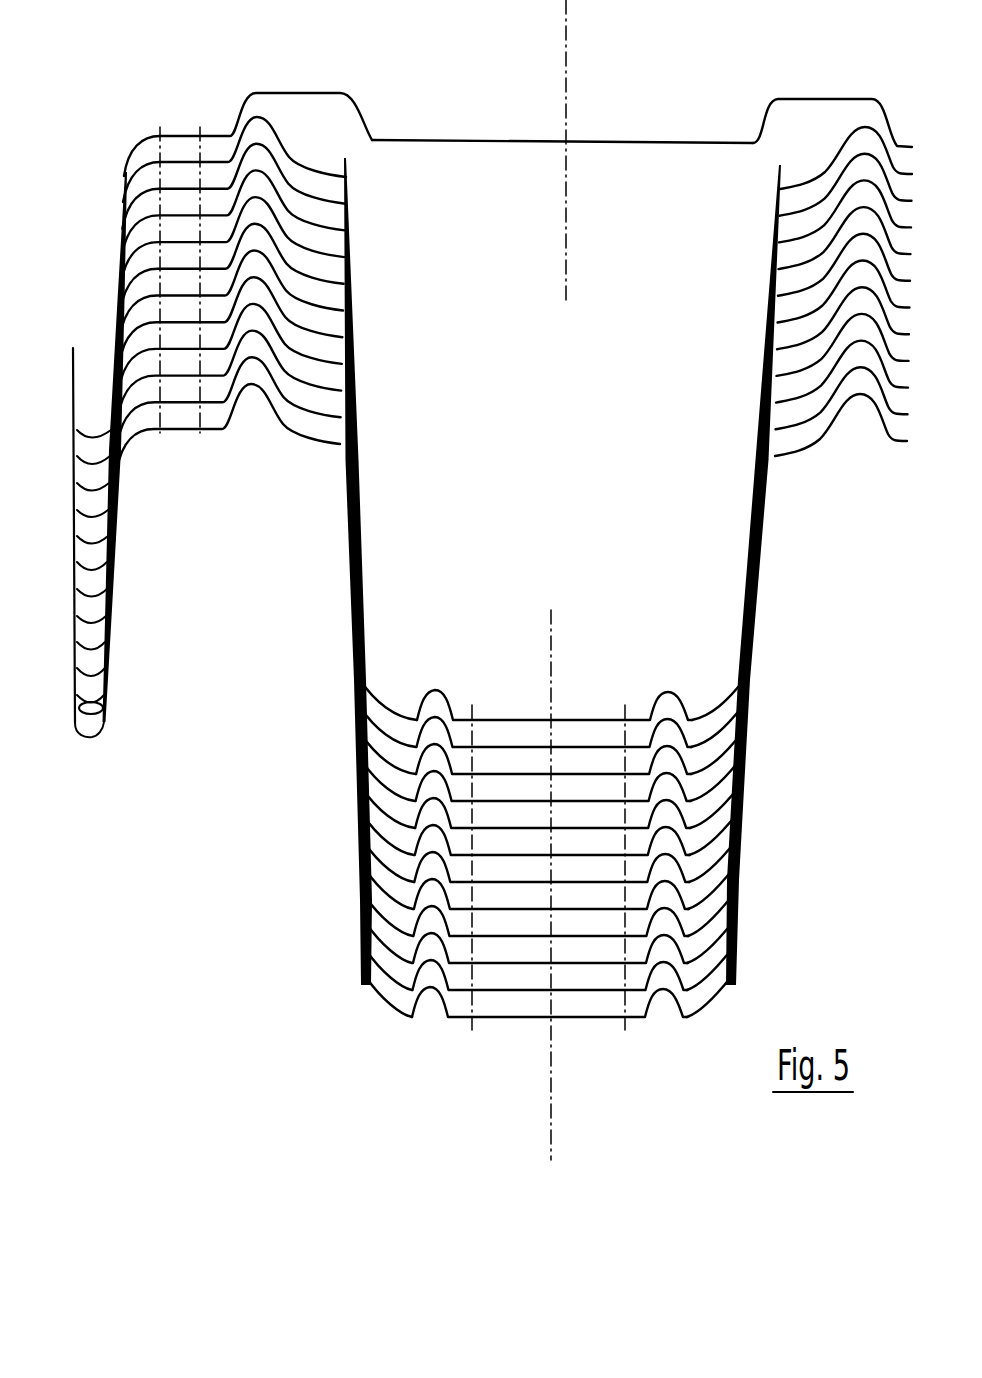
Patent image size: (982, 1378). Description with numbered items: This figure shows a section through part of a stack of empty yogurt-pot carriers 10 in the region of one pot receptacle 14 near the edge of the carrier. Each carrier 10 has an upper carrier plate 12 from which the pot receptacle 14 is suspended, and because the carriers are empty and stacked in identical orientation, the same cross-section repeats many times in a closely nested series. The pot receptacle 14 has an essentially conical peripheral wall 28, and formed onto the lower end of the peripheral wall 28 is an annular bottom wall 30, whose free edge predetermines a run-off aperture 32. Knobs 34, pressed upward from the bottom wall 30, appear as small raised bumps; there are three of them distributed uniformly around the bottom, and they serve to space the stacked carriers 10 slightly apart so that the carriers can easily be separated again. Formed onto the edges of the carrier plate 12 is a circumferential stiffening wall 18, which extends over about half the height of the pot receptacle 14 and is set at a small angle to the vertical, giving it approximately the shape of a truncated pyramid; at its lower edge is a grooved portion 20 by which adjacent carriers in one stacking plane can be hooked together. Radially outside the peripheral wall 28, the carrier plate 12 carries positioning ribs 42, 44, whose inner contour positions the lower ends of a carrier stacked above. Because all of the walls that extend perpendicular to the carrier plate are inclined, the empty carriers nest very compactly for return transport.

The carrier 10 is at (448, 128).
The carrier plate 12 is at (633, 143).
The pot receptacle 14 is at (338, 1000).
The stiffening wall 18 is at (103, 607).
The grooved portion 20 is at (93, 733).
The peripheral wall 28 is at (628, 513).
The annular bottom wall 30 is at (575, 1017).
The run-off aperture 32 is at (470, 1002).
The knob 34 is at (425, 1000).
The positioning rib 42 is at (266, 398).
The positioning rib 44 is at (861, 396).